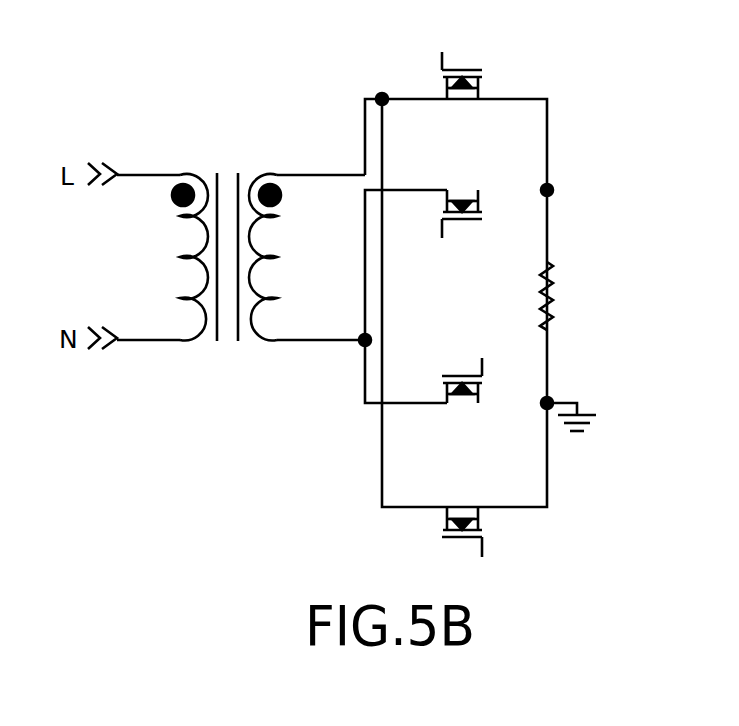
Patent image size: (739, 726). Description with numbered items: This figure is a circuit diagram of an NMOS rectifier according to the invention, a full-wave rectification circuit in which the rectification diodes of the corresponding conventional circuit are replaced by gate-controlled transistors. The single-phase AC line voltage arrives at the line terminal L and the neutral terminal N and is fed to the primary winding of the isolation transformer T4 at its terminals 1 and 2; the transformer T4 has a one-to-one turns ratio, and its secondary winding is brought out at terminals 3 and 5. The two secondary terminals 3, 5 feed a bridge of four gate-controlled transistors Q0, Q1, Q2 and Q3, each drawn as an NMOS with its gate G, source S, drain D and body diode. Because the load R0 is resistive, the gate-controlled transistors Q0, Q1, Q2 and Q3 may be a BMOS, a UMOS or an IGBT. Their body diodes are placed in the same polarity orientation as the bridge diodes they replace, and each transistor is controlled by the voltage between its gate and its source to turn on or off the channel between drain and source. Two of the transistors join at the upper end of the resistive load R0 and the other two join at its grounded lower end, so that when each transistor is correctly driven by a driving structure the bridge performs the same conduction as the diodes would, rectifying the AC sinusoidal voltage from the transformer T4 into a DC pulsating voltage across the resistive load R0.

The transformer T4 is at (244, 243).
The primary winding terminal 1 is at (148, 161).
The primary winding terminal 2 is at (148, 325).
The secondary winding terminal 3 is at (321, 161).
The secondary winding terminal 5 is at (324, 328).
The gate-controlled transistor Q0 is at (464, 86).
The gate-controlled transistor Q1 is at (463, 200).
The gate-controlled transistor Q2 is at (462, 391).
The gate-controlled transistor Q3 is at (462, 515).
The resistive load R0 is at (569, 296).